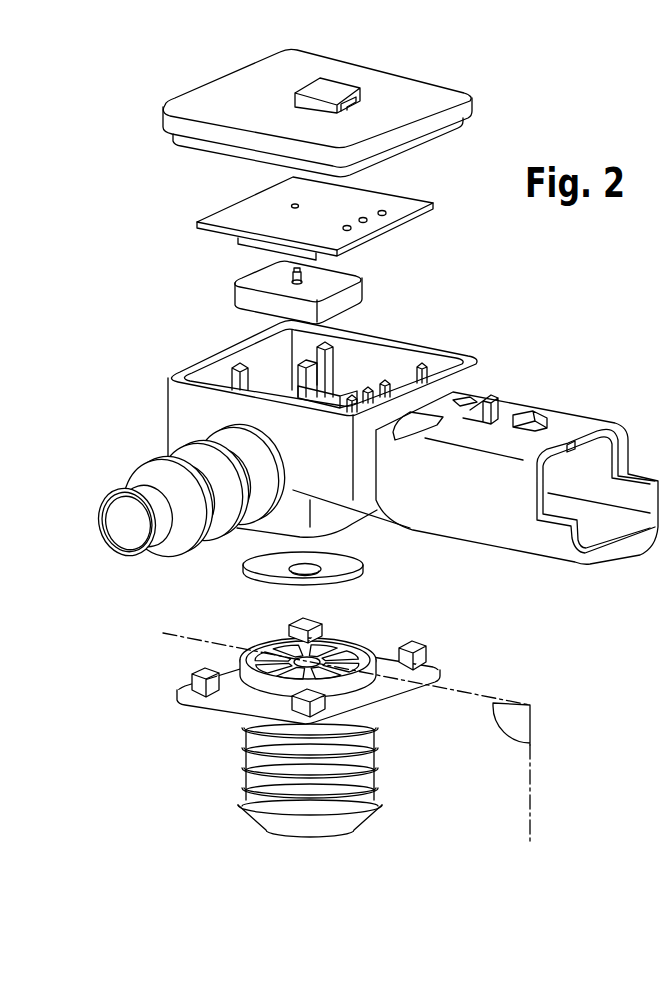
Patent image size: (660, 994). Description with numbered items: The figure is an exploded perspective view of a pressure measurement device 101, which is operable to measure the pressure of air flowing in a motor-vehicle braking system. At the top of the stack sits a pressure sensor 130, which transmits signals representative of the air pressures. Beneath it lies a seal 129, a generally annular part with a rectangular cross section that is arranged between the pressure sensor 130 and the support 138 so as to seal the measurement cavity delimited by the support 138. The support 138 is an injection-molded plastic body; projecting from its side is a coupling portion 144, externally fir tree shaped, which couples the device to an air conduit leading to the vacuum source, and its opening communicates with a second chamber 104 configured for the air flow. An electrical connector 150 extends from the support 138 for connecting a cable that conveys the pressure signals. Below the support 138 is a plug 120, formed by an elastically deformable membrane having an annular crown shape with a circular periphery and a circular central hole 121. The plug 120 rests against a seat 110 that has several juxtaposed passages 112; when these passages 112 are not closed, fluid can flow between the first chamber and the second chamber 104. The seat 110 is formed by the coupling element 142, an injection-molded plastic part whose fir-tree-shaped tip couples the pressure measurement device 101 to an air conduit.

The pressure measurement device 101 is at (545, 105).
The pressure sensor 130 is at (252, 240).
The seal 129 is at (345, 300).
The support 138 is at (420, 347).
The electrical connector 150 is at (572, 412).
The coupling portion 144 is at (147, 468).
The second chamber 104 is at (127, 533).
The plug 120 is at (360, 576).
The central hole 121 is at (315, 568).
The coupling element 142 is at (358, 775).
The seat 110 is at (352, 655).
The passages 112 is at (279, 641).